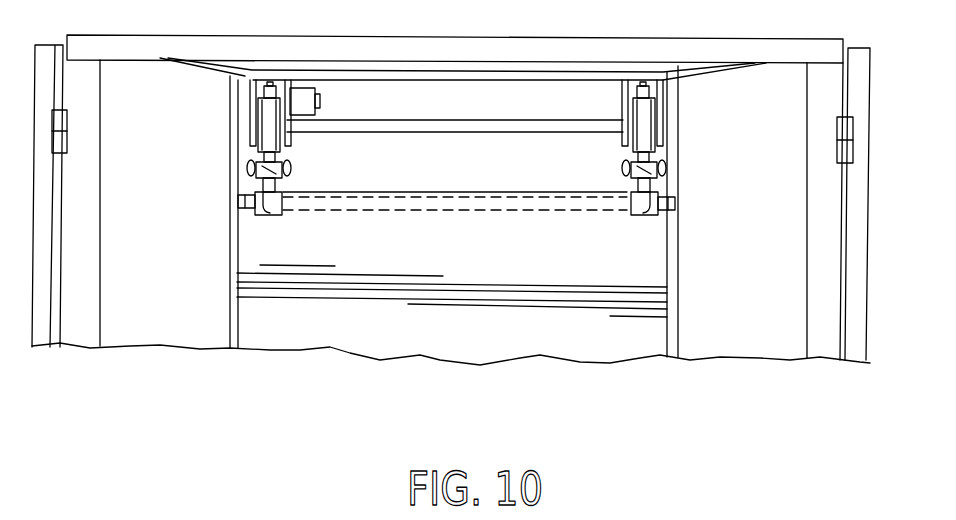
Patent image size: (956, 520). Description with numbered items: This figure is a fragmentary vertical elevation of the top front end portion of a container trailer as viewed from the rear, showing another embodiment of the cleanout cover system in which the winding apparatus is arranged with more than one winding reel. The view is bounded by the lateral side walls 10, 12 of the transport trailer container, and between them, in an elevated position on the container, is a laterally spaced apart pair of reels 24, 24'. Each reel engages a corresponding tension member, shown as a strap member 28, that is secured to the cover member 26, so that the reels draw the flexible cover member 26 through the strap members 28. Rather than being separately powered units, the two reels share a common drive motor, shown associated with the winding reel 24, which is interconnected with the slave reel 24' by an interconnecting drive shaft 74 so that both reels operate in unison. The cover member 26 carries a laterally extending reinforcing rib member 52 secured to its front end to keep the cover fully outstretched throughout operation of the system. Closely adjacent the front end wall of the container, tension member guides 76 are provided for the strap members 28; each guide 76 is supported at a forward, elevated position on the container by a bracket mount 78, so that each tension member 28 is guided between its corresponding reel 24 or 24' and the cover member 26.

The lateral side wall 10 is at (736, 325).
The lateral side wall 12 is at (151, 314).
The power driven tension member-supporting reel apparatus 24 is at (215, 121).
The slave reel 24' is at (701, 121).
The cover member 26 is at (585, 338).
The strap member 28 is at (278, 217).
The reinforcing rib member 52 is at (526, 220).
The interconnecting drive shaft 74 is at (462, 127).
The tension member guide 76 is at (288, 163).
The bracket mount 78 is at (666, 166).